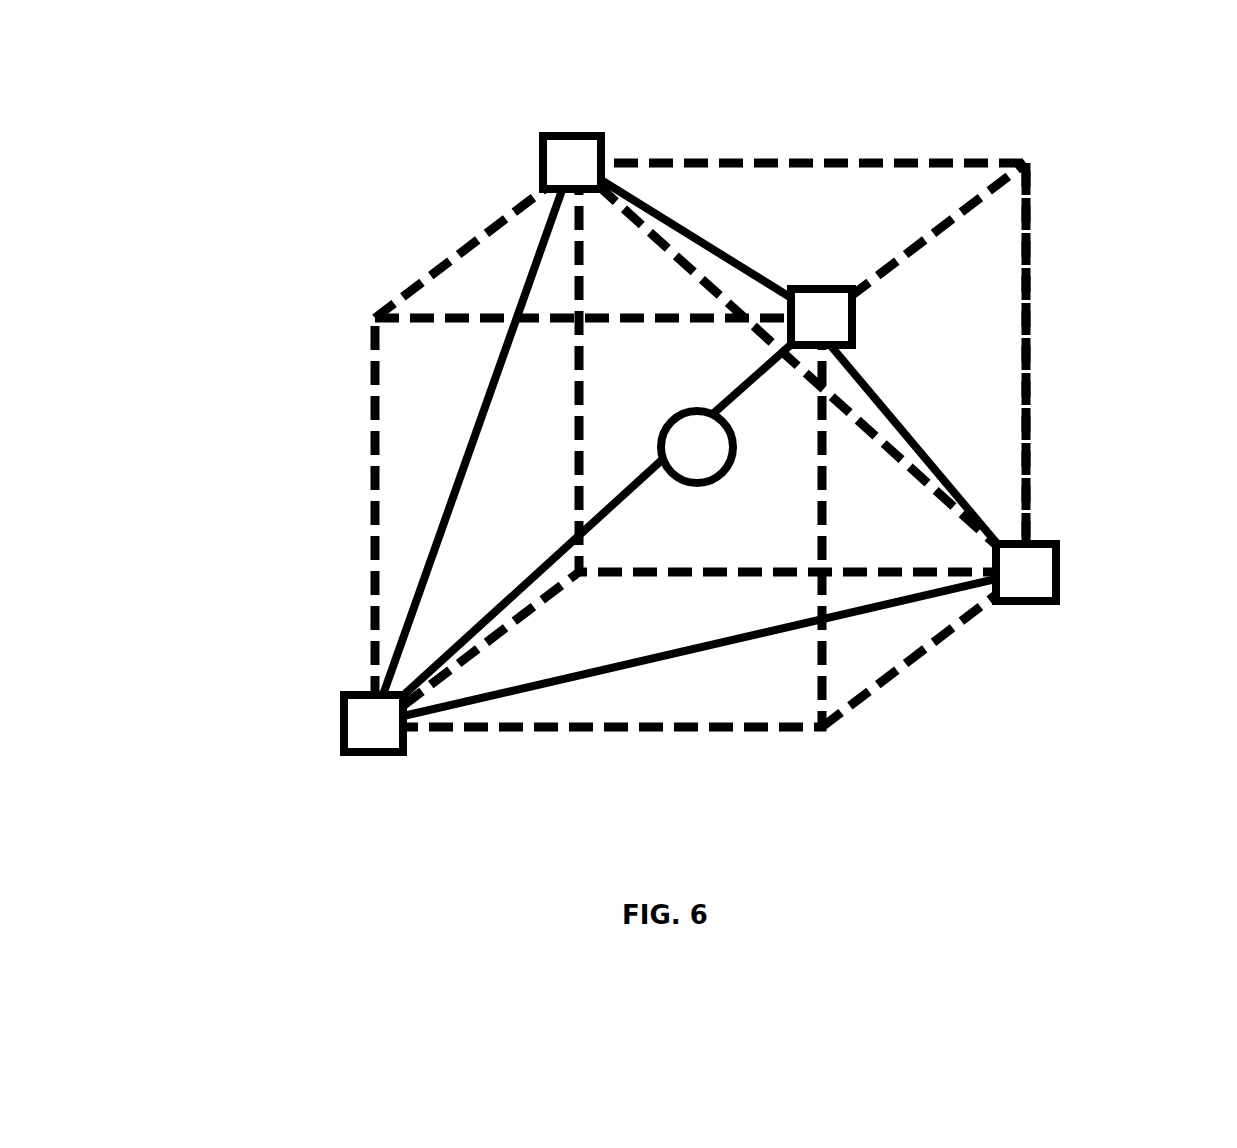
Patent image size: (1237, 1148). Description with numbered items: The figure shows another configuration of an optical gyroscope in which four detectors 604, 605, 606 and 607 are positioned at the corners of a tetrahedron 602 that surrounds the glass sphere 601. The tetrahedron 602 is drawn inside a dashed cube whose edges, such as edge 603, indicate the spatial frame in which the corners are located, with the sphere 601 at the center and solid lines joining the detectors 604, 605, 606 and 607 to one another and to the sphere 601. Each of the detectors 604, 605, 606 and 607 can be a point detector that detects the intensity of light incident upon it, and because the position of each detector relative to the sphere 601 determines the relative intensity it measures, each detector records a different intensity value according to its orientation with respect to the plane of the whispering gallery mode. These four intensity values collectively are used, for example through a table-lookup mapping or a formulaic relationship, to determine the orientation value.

The sphere 601 is at (722, 472).
The tetrahedron 602 is at (530, 267).
The cube edge 603 is at (1027, 250).
The detector 604 is at (541, 150).
The detector 605 is at (822, 288).
The detector 606 is at (1025, 601).
The detector 607 is at (373, 752).